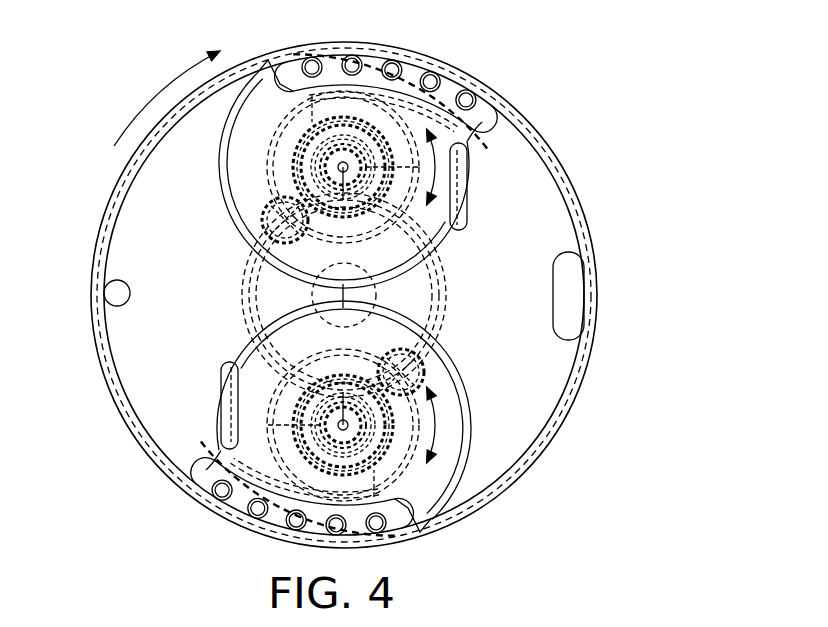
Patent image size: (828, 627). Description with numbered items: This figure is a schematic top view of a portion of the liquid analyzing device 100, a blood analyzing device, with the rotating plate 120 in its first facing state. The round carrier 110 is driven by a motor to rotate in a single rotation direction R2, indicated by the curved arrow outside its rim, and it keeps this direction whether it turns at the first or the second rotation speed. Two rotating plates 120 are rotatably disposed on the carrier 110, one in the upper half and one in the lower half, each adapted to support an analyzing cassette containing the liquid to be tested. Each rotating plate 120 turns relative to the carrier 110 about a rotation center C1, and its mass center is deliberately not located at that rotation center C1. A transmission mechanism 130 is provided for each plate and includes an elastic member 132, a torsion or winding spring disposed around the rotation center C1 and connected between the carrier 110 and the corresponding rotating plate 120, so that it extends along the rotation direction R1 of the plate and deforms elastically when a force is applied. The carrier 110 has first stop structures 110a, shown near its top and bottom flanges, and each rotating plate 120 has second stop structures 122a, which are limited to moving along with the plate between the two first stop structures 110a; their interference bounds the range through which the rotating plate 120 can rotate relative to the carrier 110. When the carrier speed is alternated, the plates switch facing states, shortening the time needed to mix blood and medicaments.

The liquid analyzing device 100 is at (712, 84).
The carrier 110 is at (547, 236).
The first stop structure 110a is at (293, 247).
The rotating plate 120 is at (323, 50).
The second stop structure 122a is at (242, 242).
The transmission mechanism 130 is at (387, 117).
The elastic member 132 is at (357, 114).
The rotation center C1 is at (343, 170).
The rotation direction R1 is at (430, 150).
The rotation direction R2 is at (152, 87).